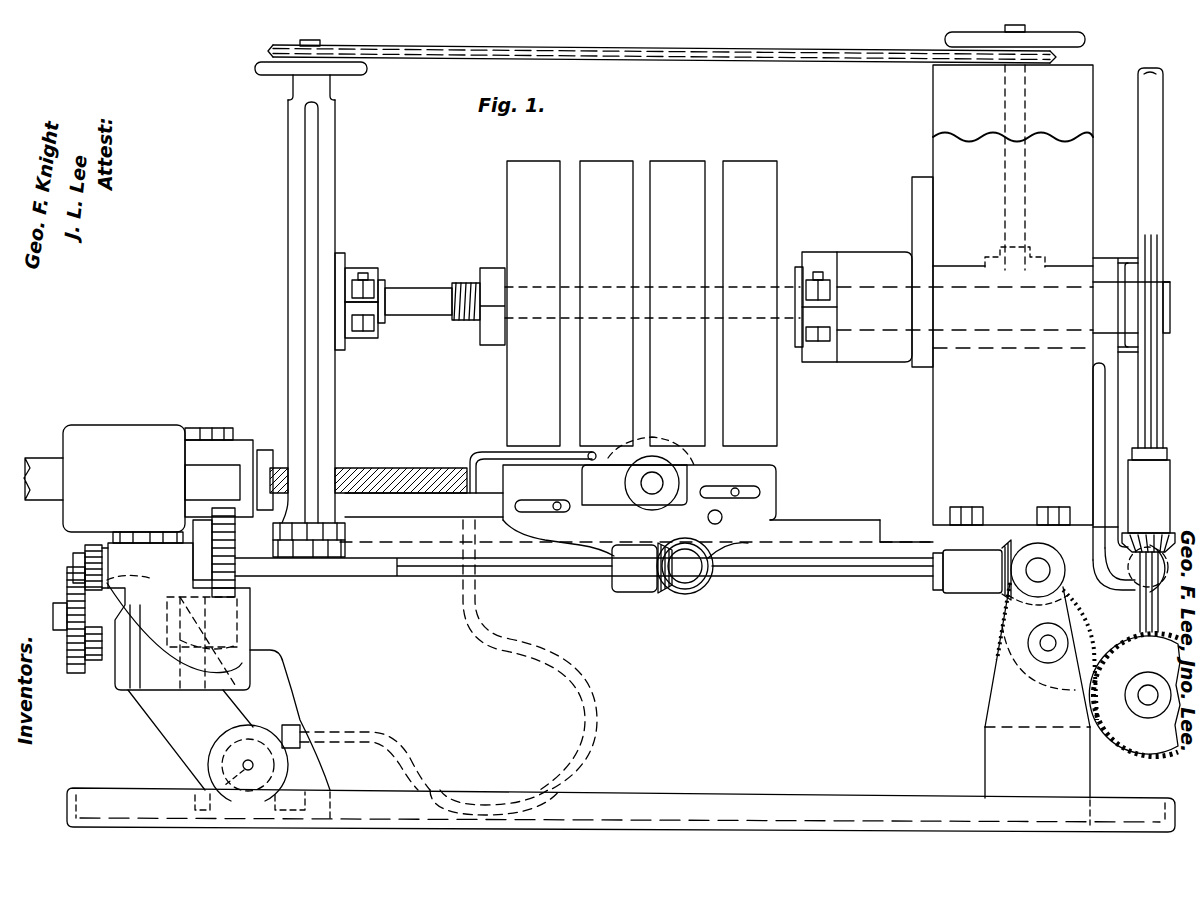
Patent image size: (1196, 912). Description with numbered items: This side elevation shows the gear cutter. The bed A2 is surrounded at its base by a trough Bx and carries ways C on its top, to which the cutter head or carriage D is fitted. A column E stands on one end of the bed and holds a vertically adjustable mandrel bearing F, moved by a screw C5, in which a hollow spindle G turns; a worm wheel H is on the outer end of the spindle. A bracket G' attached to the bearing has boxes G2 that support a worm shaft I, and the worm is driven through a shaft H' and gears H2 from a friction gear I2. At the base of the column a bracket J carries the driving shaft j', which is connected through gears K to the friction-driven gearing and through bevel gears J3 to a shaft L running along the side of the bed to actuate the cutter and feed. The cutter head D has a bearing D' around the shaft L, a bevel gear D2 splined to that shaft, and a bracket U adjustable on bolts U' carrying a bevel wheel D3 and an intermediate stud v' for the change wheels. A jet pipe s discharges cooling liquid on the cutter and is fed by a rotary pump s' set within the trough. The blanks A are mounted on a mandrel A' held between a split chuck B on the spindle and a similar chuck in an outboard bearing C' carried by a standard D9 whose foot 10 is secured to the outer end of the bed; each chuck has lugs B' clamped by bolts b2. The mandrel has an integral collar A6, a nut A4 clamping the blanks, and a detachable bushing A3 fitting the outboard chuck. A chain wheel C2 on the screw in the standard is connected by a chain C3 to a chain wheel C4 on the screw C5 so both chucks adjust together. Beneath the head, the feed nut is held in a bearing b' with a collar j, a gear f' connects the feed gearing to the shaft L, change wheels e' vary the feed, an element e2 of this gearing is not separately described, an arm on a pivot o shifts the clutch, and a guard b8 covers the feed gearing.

The blanks A is at (639, 303).
The mandrel A' is at (418, 286).
The bed A2 is at (652, 490).
The detachable bushing A3 is at (385, 318).
The nut A4 is at (480, 330).
The integral collar A6 is at (800, 350).
The split chuck B is at (591, 322).
The lugs B' is at (615, 278).
The bolts b2 is at (364, 273).
The bearing b' is at (219, 478).
The guard b8 is at (128, 472).
The trough Bx is at (497, 790).
The ways C is at (601, 505).
The outboard bearing C' is at (350, 323).
The chain wheel C2 is at (268, 51).
The chain C3 is at (750, 61).
The chain wheel C4 is at (1058, 56).
The screw C5 is at (1000, 26).
The cutter head D is at (634, 483).
The bearing D' is at (634, 582).
The bevel gear D2 is at (671, 581).
The bevel wheel D3 is at (705, 588).
The standard D9 is at (311, 292).
The standard foot 10 is at (290, 523).
The column E is at (933, 425).
The change wheels e' is at (77, 616).
The gear housing e2 is at (170, 645).
The mandrel bearing F is at (912, 213).
The gear f' is at (241, 557).
The hollow spindle G is at (1003, 292).
The bracket G' is at (1095, 476).
The boxes G2 is at (1165, 578).
The worm wheel H is at (1134, 258).
The shaft H' is at (1131, 378).
The gears H2 is at (1150, 535).
The worm shaft I is at (1135, 568).
The friction gear I2 is at (1148, 758).
The bracket J is at (990, 702).
The collar j is at (265, 465).
The driving shaft j' is at (1049, 570).
The bevel gears J3 is at (1003, 590).
The gears K is at (1028, 545).
The shaft L is at (352, 576).
The pivot o is at (635, 450).
The jet pipe s is at (533, 459).
The rotary pump s' is at (229, 725).
The bracket U is at (627, 510).
The bolts U' is at (653, 494).
The intermediate stud v' is at (700, 518).